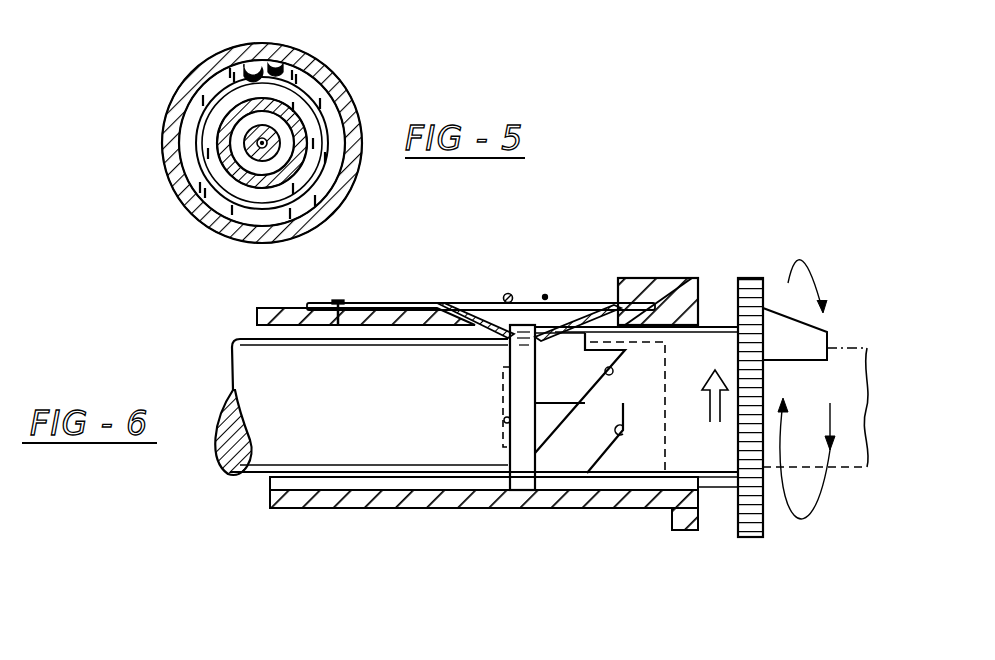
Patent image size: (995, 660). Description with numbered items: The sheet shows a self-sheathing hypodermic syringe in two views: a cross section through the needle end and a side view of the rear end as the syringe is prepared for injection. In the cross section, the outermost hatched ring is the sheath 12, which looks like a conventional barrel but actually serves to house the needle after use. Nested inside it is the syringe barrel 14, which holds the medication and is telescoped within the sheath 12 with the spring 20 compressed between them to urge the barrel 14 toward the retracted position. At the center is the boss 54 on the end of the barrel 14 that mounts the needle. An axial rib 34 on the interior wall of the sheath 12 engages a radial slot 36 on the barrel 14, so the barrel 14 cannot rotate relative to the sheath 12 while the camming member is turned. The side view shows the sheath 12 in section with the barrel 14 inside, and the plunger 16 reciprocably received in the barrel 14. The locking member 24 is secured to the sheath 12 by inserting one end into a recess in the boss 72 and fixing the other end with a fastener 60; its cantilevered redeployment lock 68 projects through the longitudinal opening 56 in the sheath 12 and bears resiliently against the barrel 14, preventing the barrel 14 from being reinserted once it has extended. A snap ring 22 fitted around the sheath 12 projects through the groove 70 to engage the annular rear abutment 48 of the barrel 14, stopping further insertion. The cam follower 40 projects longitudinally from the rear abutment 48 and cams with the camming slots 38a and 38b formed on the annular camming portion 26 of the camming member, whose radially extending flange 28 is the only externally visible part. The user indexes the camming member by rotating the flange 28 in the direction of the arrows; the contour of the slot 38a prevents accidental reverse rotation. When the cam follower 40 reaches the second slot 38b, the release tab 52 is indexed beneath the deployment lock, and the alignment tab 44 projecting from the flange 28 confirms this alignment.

In FIG. 5, the sheath 12 is at (331, 70).
In FIG. 6, the sheath 12 is at (268, 320).
In FIG. 5, the syringe barrel 14 is at (309, 118).
In FIG. 6, the syringe barrel 14 is at (311, 457).
In FIG. 6, the plunger 16 is at (846, 462).
In FIG. 5, the spring 20 is at (203, 133).
In FIG. 6, the snap ring 22 is at (508, 293).
In FIG. 6, the locking member 24 is at (545, 296).
In FIG. 6, the annular camming portion 26 is at (717, 488).
In FIG. 6, the flange 28 is at (765, 285).
In FIG. 5, the axial rib 34 is at (250, 66).
In FIG. 5, the radial slot 36 is at (283, 62).
In FIG. 6, the camming slot 38a is at (613, 372).
In FIG. 6, the second cam slot 38b is at (620, 433).
In FIG. 6, the cam follower 40 is at (550, 420).
In FIG. 6, the alignment tab 44 is at (822, 333).
In FIG. 6, the rear abutment 48 is at (522, 492).
In FIG. 6, the release tab 52 is at (590, 352).
In FIG. 5, the boss 54 is at (300, 168).
In FIG. 6, the longitudinal opening 56 is at (560, 334).
In FIG. 6, the fastener 60 is at (338, 300).
In FIG. 6, the redeployment lock 68 is at (481, 304).
In FIG. 6, the groove 70 is at (504, 421).
In FIG. 6, the boss 72 is at (668, 278).